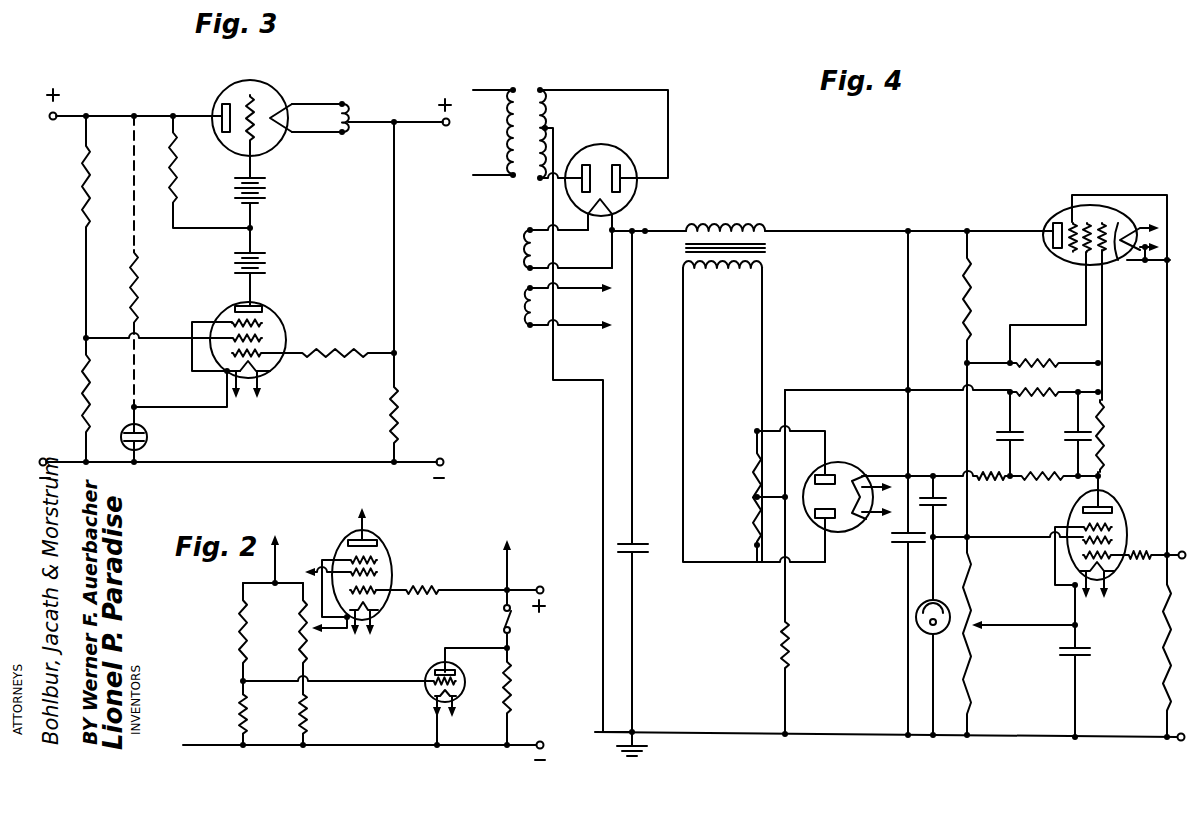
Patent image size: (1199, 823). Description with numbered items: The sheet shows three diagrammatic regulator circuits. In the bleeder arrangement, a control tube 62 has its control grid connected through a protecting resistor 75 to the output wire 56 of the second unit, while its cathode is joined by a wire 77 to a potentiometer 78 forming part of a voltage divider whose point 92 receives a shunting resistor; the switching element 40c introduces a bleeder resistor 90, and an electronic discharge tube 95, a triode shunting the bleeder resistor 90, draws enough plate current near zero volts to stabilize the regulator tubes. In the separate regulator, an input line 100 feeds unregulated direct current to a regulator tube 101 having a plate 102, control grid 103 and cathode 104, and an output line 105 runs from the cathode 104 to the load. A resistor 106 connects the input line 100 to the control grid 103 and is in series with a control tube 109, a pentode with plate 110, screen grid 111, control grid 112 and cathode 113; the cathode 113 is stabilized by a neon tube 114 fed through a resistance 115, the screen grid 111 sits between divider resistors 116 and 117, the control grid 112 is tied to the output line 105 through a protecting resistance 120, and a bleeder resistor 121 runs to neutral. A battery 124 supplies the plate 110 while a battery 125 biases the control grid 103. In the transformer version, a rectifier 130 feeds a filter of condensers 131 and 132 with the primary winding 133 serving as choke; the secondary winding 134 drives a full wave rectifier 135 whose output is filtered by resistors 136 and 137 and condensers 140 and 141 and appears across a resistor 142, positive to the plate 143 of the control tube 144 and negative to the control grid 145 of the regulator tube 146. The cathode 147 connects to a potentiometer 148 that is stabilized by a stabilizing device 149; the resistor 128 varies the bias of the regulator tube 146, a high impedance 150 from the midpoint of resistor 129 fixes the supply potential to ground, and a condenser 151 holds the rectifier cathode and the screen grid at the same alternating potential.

In FIG. 3, the input line 100 is at (111, 115).
In FIG. 3, the regulator tube 101 is at (282, 99).
In FIG. 3, the plate 102 is at (222, 108).
In FIG. 3, the control grid 103 is at (254, 95).
In FIG. 3, the cathode 104 is at (281, 138).
In FIG. 3, the output line 105 is at (383, 117).
In FIG. 3, the resistor 106 is at (181, 178).
In FIG. 3, the control tube 109 is at (230, 313).
In FIG. 3, the plate 110 is at (262, 308).
In FIG. 3, the screen grid 111 is at (266, 338).
In FIG. 3, the control grid 112 is at (268, 354).
In FIG. 3, the cathode 113 is at (225, 375).
In FIG. 3, the neon tube 114 is at (148, 438).
In FIG. 3, the resistance 115 is at (139, 285).
In FIG. 3, the resistor 116 is at (82, 184).
In FIG. 3, the resistor 117 is at (76, 392).
In FIG. 3, the protecting resistance 120 is at (337, 362).
In FIG. 3, the resistor 121 is at (398, 413).
In FIG. 3, the battery 124 is at (270, 258).
In FIG. 3, the battery 125 is at (268, 190).
In FIG. 2, the control tube 62 is at (394, 546).
In FIG. 2, the protecting resistor 75 is at (424, 587).
In FIG. 2, the wire 77 is at (321, 637).
In FIG. 2, the potentiometer 78 is at (296, 643).
In FIG. 2, the bleeder resistor 90 is at (516, 691).
In FIG. 2, the point 92 is at (275, 587).
In FIG. 2, the electronic discharge tube 95 is at (458, 674).
In FIG. 2, the wire 56 is at (512, 559).
In FIG. 2, the switching element 40c is at (502, 614).
In FIG. 4, the resistor 128 is at (1042, 363).
In FIG. 4, the resistor 129 is at (765, 494).
In FIG. 4, the rectifier 130 is at (616, 152).
In FIG. 4, the condenser 131 is at (648, 550).
In FIG. 4, the condenser 132 is at (890, 542).
In FIG. 4, the primary winding 133 is at (731, 228).
In FIG. 4, the secondary winding 134 is at (722, 273).
In FIG. 4, the rectifier 135 is at (838, 470).
In FIG. 4, the resistor 136 is at (1049, 393).
In FIG. 4, the resistor 137 is at (1036, 474).
In FIG. 4, the condenser 140 is at (990, 432).
In FIG. 4, the condenser 141 is at (1068, 435).
In FIG. 4, the resistor 142 is at (1104, 433).
In FIG. 4, the plate 143 is at (1110, 509).
In FIG. 4, the control tube 144 is at (1066, 512).
In FIG. 4, the control grid 145 is at (1106, 256).
In FIG. 4, the regulator tube 146 is at (1050, 214).
In FIG. 4, the cathode 147 is at (1078, 567).
In FIG. 4, the potentiometer 148 is at (975, 632).
In FIG. 4, the stabilizing device 149 is at (918, 626).
In FIG. 4, the high impedance 150 is at (792, 648).
In FIG. 4, the condenser 151 is at (938, 507).